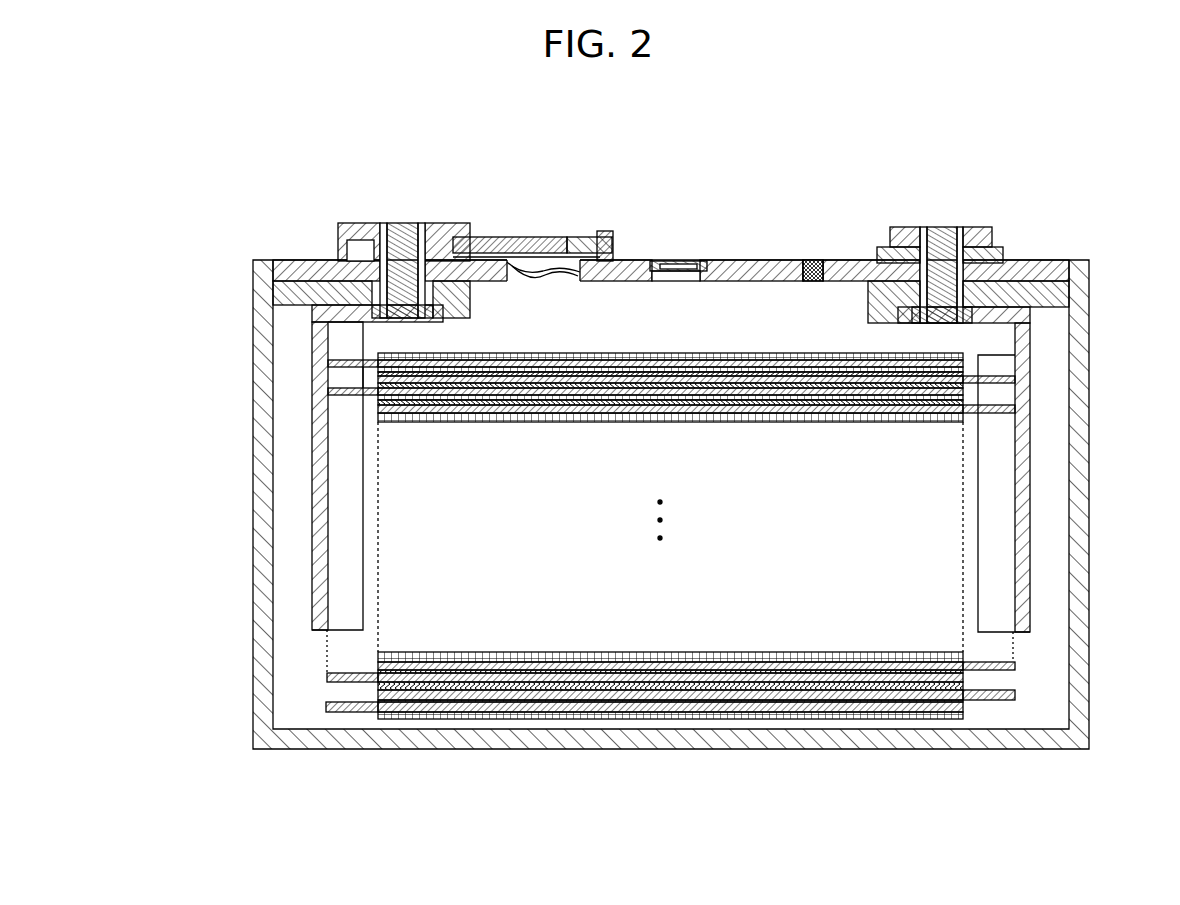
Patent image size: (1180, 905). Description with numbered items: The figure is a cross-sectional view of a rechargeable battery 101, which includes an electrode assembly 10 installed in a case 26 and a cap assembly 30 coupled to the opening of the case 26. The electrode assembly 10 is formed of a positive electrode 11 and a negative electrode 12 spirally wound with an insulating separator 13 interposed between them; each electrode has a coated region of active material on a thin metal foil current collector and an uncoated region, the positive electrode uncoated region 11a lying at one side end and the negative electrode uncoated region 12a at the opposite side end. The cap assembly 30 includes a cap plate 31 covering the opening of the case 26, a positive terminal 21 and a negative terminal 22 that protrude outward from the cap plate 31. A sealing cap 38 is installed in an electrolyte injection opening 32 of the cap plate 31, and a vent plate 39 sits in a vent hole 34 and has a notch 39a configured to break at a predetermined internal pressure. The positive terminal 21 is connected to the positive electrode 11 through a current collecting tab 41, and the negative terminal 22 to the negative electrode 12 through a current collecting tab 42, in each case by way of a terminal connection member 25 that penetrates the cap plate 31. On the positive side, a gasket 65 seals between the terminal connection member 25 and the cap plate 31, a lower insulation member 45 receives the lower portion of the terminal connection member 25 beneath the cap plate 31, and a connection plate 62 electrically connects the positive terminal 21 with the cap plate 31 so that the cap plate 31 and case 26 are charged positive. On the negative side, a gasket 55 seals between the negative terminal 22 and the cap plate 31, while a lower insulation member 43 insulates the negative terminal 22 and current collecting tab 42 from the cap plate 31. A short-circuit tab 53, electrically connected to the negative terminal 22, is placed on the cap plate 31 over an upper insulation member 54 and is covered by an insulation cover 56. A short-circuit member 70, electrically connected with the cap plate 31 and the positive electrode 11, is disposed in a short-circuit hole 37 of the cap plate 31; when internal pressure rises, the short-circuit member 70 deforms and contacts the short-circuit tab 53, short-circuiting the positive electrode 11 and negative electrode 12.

The rechargeable battery 101 is at (856, 134).
The electrode assembly 10 is at (669, 578).
The positive electrode 11 is at (858, 690).
The positive electrode uncoated region 11a is at (997, 700).
The negative electrode 12 is at (462, 712).
The negative electrode uncoated region 12a is at (342, 712).
The separator 13 is at (668, 705).
The positive terminal 21 is at (973, 227).
The negative terminal 22 is at (367, 223).
The terminal connection member 25 is at (403, 225).
The case 26 is at (1089, 546).
The cap assembly 30 is at (686, 251).
The cap plate 31 is at (1053, 267).
The electrolyte injection opening 32 is at (813, 283).
The vent hole 34 is at (692, 283).
The short-circuit hole 37 is at (580, 237).
The sealing cap 38 is at (813, 261).
The vent plate 39 is at (703, 262).
The notch 39a is at (678, 263).
The current collecting tab 41 is at (1030, 449).
The current collecting tab 42 is at (312, 416).
The lower insulation member 43 is at (287, 300).
The lower insulation member 45 is at (1050, 303).
The short-circuit tab 53 is at (473, 240).
The upper insulation member 54 is at (613, 231).
The gasket 55 is at (373, 273).
The insulation cover 56 is at (527, 237).
The connection plate 62 is at (1007, 247).
The gasket 65 is at (915, 277).
The short-circuit member 70 is at (543, 271).